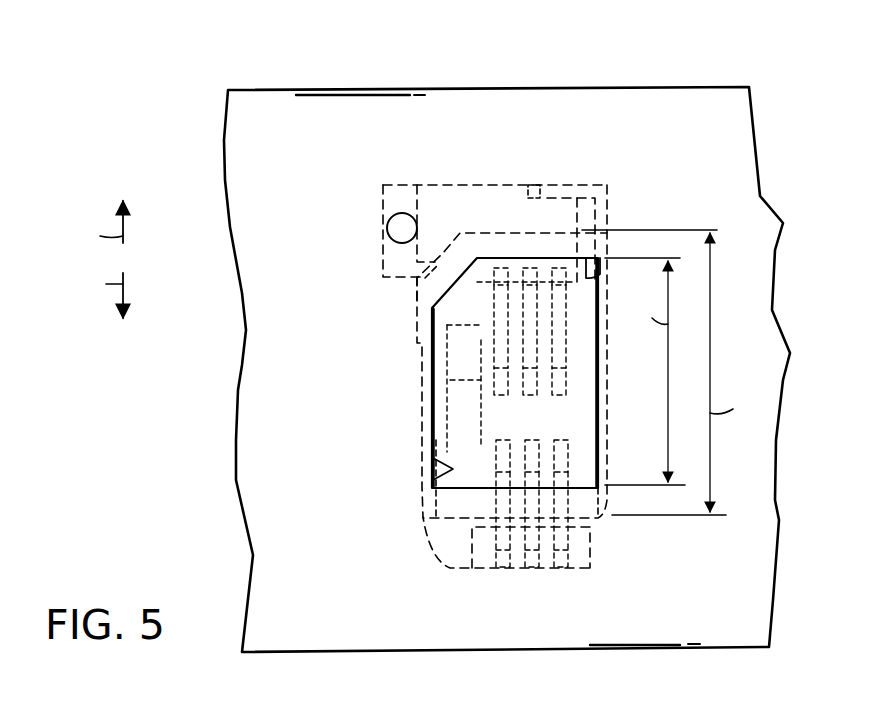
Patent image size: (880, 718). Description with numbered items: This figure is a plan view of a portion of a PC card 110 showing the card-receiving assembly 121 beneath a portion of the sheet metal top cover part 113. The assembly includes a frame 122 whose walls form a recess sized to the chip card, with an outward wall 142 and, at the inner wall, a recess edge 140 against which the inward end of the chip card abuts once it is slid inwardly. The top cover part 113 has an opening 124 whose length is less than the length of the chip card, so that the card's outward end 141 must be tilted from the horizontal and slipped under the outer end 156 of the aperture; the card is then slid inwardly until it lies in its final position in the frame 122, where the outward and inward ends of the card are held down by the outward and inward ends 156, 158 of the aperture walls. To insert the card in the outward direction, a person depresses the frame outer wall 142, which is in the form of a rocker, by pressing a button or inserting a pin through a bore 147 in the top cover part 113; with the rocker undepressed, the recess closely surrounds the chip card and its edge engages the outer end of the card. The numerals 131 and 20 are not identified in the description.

The PC card 110 is at (158, 171).
The top cover part 113 is at (238, 383).
The card-receiving assembly 121 is at (515, 176).
The frame 122 is at (424, 431).
The opening 124 is at (432, 484).
The chamfered corner guide 131 is at (433, 282).
The recess edge 140 is at (555, 568).
The outward end 141 is at (550, 198).
The outward wall 142 is at (464, 198).
The bore 147 is at (387, 219).
The outer end 156 is at (594, 272).
The inward end 158 is at (462, 476).
The connector 20 is at (604, 521).